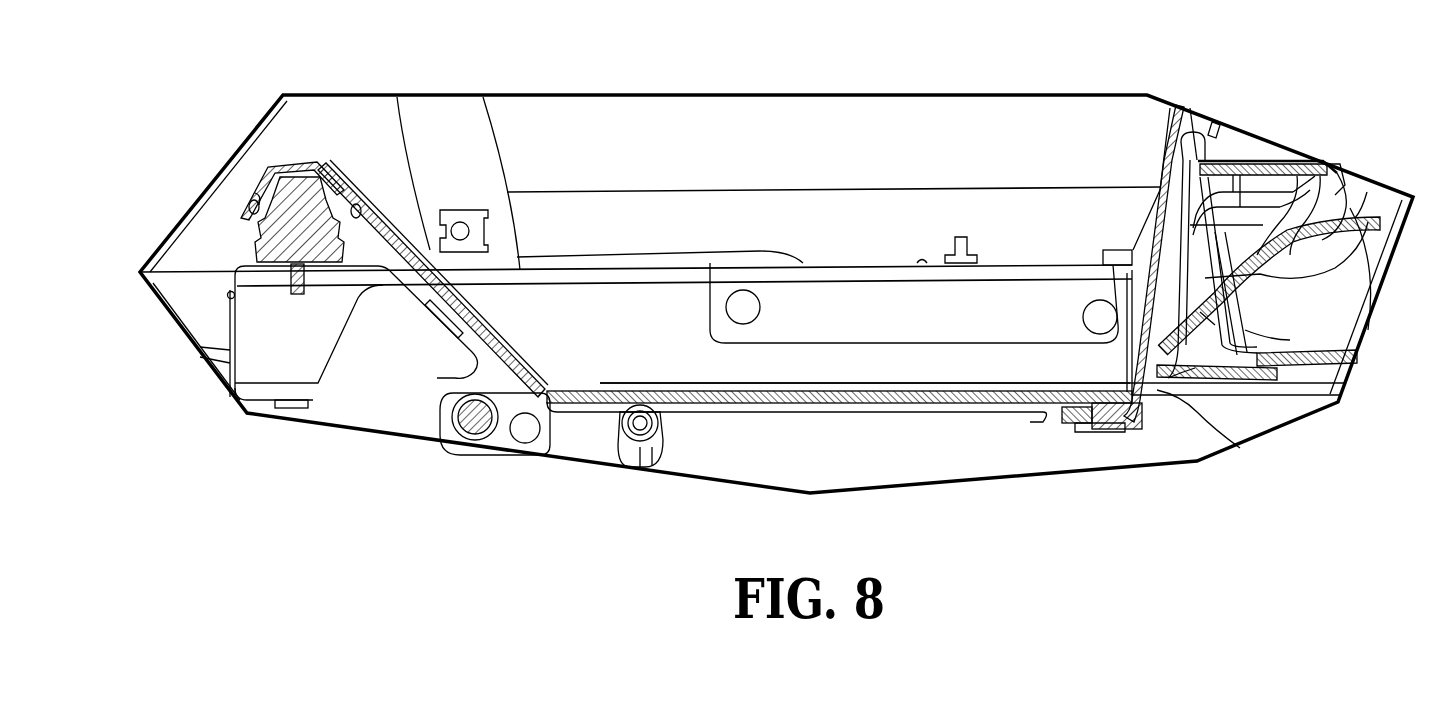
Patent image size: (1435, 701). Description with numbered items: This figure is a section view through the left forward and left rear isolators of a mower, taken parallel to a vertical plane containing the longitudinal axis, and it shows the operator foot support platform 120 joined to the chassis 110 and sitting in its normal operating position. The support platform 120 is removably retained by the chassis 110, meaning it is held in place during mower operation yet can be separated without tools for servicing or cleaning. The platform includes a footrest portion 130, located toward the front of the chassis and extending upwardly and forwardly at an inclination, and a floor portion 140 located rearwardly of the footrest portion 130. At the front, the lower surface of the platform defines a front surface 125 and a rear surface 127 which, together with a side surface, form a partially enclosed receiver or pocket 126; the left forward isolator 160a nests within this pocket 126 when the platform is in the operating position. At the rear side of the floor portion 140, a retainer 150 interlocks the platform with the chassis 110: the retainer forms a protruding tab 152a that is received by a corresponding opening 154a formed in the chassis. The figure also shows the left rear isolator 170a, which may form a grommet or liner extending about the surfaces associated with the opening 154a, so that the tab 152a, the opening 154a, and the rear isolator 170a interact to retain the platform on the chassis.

The chassis 110 is at (256, 272).
The operator foot support platform 120 is at (603, 391).
The front surface 125 is at (248, 210).
The receiver or pocket 126 is at (317, 167).
The rear surface 127 is at (377, 217).
The footrest portion 130 is at (345, 182).
The floor portion 140 is at (858, 392).
The retainer 150 is at (1093, 382).
The tab 152a is at (1128, 432).
The opening 154a is at (1116, 393).
The left forward isolator 160a is at (253, 193).
The left rear isolator 170a is at (1077, 430).